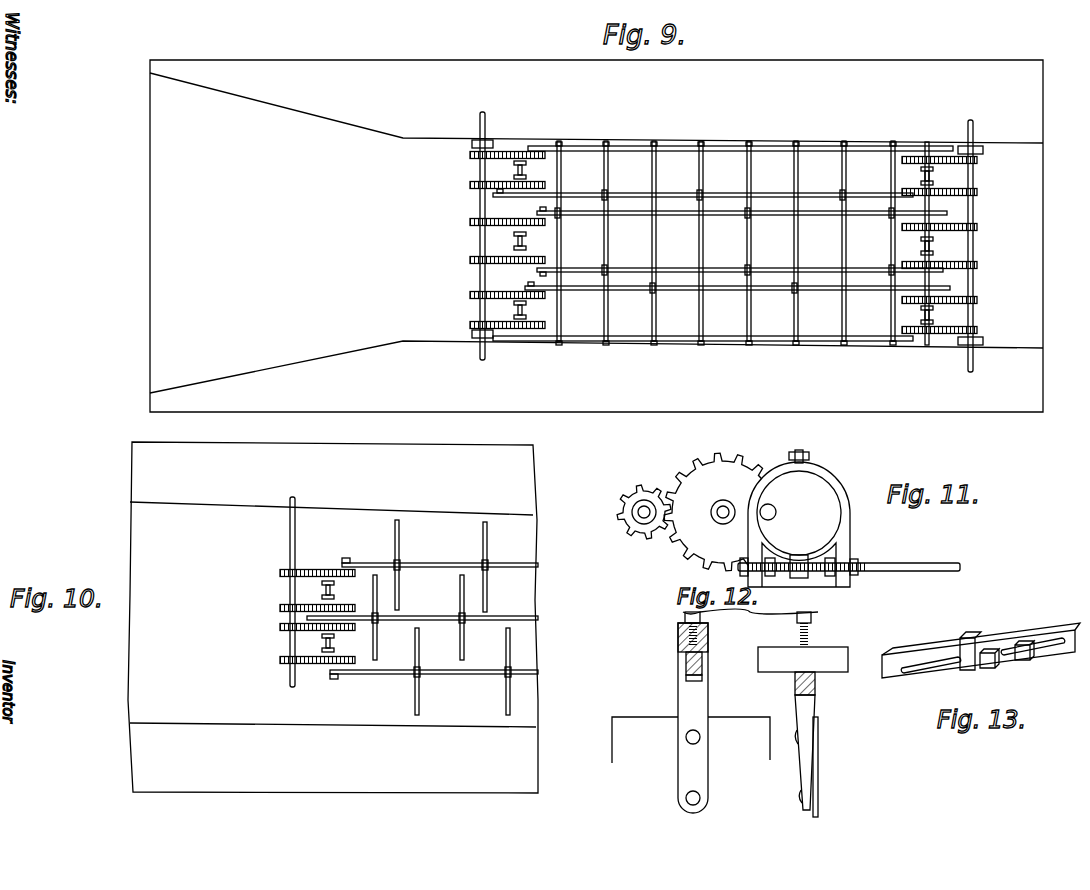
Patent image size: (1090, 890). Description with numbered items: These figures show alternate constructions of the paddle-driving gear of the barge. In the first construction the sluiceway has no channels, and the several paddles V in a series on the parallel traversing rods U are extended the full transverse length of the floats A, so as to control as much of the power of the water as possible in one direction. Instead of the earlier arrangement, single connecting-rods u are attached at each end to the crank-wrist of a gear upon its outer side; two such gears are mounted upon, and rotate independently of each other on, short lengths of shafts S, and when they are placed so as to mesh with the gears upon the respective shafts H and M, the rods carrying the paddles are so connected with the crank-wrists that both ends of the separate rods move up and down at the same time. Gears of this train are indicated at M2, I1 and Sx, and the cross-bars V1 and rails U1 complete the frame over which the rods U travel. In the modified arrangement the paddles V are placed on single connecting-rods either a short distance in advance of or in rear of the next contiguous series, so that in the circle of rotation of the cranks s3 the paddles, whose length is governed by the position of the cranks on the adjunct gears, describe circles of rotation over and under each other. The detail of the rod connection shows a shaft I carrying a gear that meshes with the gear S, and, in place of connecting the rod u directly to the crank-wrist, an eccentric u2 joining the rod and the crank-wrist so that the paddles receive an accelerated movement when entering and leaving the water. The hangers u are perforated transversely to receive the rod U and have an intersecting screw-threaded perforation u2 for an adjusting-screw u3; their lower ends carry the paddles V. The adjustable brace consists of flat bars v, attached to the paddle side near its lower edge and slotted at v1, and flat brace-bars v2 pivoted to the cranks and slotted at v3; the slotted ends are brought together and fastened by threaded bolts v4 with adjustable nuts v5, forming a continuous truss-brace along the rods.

In FIG. 9, the float A is at (596, 225).
In FIG. 9, the driving-shaft M is at (478, 240).
In FIG. 10, the driving-shaft M is at (288, 548).
In FIG. 9, the gear wheel M2 is at (470, 222).
In FIG. 10, the gear wheel M2 is at (280, 660).
In FIG. 9, the pinion Sx is at (523, 243).
In FIG. 9, the cross bar V1 is at (604, 244).
In FIG. 9, the traversing rod U is at (721, 241).
In FIG. 10, the traversing rod U is at (512, 560).
In FIG. 12, the traversing rod U is at (685, 657).
In FIG. 9, the rail U1 is at (723, 243).
In FIG. 12, the rail U1 is at (685, 680).
In FIG. 9, the driving-shaft H is at (975, 210).
In FIG. 11, the driving-shaft H is at (636, 532).
In FIG. 9, the gear train I1 is at (975, 297).
In FIG. 10, the crank s3 is at (345, 564).
In FIG. 10, the paddle V is at (399, 540).
In FIG. 12, the paddle V is at (837, 762).
In FIG. 11, the shaft I is at (646, 500).
In FIG. 11, the short shaft S is at (723, 512).
In FIG. 11, the screw-threaded perforation u2 is at (832, 505).
In FIG. 11, the hanger u is at (905, 563).
In FIG. 12, the hanger u is at (693, 718).
In FIG. 12, the adjusting-screw u3 is at (825, 622).
In FIG. 13, the flat bar v is at (981, 660).
In FIG. 13, the longitudinal slot v1 is at (938, 664).
In FIG. 13, the flat brace-bar v2 is at (1070, 648).
In FIG. 13, the longitudinal slot v3 is at (1050, 658).
In FIG. 13, the threaded bolt v4 is at (967, 672).
In FIG. 13, the adjustable nut v5 is at (1005, 665).